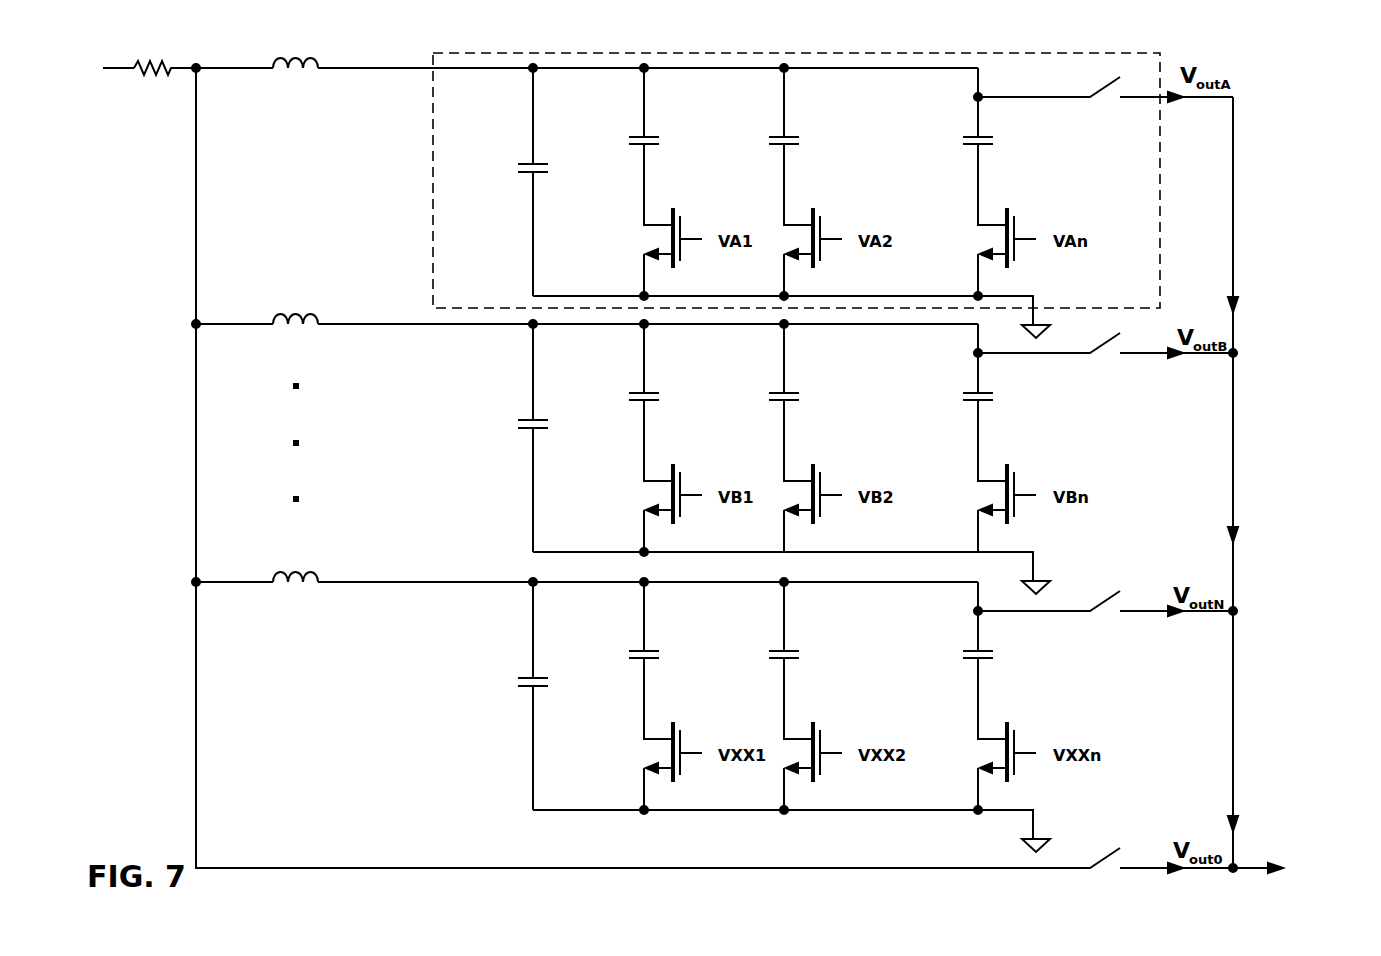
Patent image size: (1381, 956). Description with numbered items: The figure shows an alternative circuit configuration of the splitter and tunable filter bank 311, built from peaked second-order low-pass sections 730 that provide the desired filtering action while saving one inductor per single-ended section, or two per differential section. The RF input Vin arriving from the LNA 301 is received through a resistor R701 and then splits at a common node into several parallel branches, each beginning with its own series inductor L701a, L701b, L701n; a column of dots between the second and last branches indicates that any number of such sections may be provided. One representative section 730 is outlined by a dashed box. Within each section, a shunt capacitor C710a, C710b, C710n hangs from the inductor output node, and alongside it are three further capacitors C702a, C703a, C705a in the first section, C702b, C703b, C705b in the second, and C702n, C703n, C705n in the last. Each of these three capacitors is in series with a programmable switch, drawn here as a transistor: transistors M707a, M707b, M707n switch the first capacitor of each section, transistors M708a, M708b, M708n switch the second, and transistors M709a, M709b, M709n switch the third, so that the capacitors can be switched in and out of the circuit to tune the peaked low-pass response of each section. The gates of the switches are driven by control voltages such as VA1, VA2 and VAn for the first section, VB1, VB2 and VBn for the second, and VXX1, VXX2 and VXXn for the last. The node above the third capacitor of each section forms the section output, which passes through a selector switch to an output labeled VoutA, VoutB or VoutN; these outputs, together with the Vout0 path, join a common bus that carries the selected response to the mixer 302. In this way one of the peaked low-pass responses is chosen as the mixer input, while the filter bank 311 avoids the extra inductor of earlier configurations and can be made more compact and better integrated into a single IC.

The filter bank 311 is at (690, 468).
The peaked second-order low-pass section 730 is at (430, 195).
The LNA 301 is at (82, 93).
The mixer 302 is at (1334, 870).
The resistor R701 is at (163, 54).
The inductor L701a is at (297, 77).
The inductor L701b is at (297, 306).
The inductor L701n is at (297, 563).
The capacitor C710a is at (498, 182).
The capacitor C710b is at (498, 438).
The capacitor C710n is at (498, 696).
The capacitor C702a is at (677, 110).
The capacitor C702b is at (677, 366).
The capacitor C702n is at (677, 624).
The capacitor C703a is at (817, 110).
The capacitor C703b is at (817, 366).
The capacitor C703n is at (817, 624).
The capacitor C705a is at (1011, 110).
The capacitor C705b is at (1011, 366).
The capacitor C705n is at (1011, 624).
The programmable switch M707a is at (648, 220).
The programmable switch M707b is at (648, 476).
The programmable switch M707n is at (648, 734).
The programmable switch M708a is at (800, 207).
The programmable switch M708b is at (800, 463).
The programmable switch M708n is at (800, 721).
The programmable switch M709a is at (994, 207).
The programmable switch M709b is at (994, 463).
The programmable switch M709n is at (994, 721).